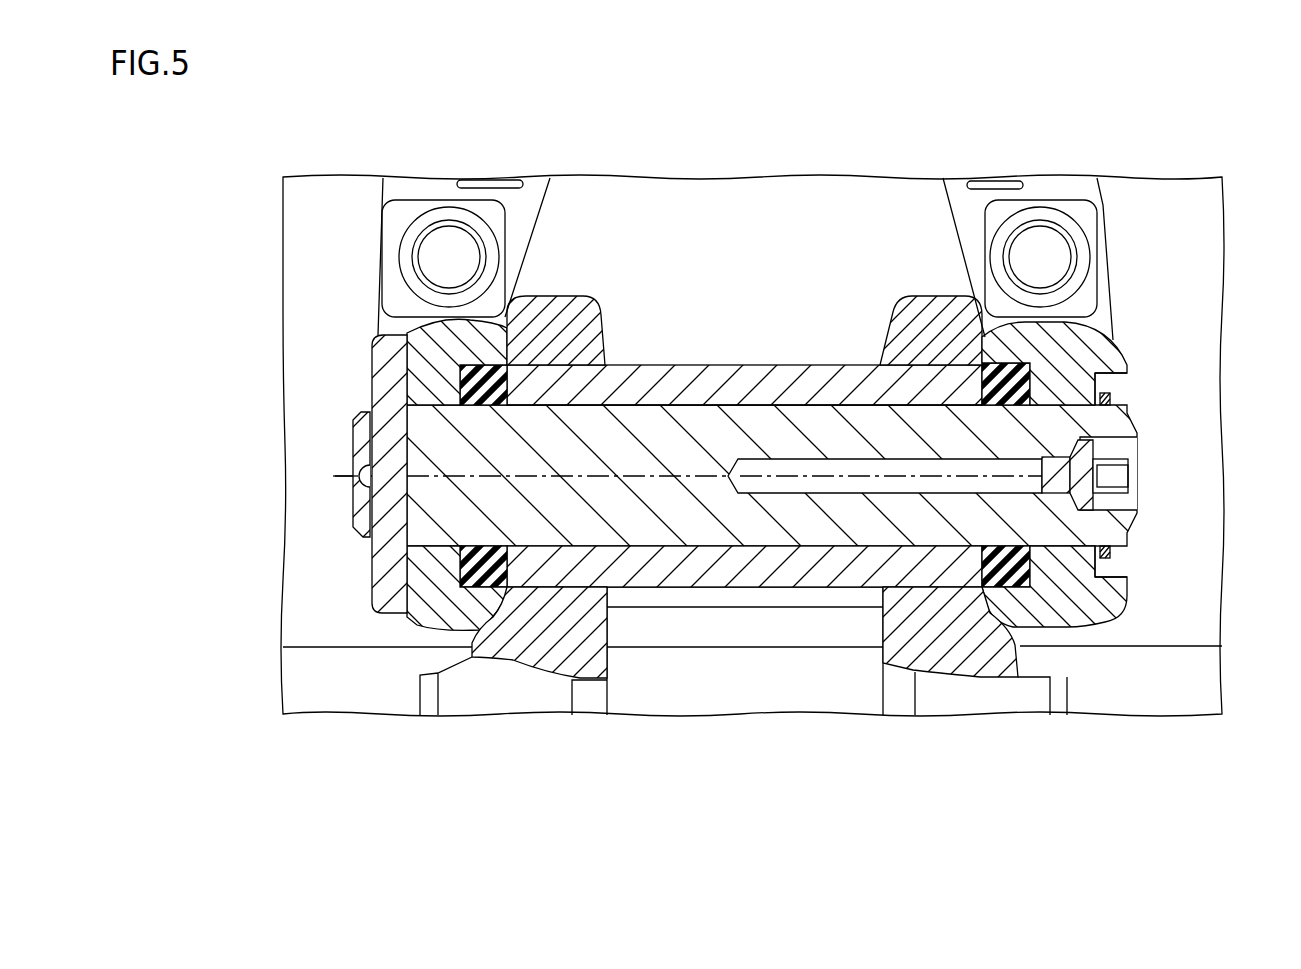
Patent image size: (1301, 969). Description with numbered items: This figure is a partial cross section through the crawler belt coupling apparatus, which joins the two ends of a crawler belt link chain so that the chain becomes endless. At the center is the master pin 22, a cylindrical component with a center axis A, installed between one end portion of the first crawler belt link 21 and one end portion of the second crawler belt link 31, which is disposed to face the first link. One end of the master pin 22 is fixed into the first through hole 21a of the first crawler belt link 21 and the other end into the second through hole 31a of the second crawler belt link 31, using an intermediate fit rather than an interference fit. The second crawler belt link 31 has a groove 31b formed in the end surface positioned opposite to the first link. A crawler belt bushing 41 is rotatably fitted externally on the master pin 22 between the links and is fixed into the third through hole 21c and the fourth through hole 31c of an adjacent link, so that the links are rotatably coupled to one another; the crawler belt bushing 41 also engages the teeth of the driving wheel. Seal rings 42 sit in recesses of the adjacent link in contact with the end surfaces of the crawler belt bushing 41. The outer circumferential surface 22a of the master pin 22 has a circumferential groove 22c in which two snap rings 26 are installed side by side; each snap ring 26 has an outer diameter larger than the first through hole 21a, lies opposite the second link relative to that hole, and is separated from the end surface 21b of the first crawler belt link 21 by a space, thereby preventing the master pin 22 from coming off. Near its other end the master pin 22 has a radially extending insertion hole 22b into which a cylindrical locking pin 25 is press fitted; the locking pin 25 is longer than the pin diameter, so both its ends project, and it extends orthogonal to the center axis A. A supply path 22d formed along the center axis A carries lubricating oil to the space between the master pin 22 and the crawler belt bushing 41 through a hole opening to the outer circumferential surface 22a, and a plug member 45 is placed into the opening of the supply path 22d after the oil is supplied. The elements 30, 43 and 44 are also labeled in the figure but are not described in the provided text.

The housing 30 is at (1197, 324).
The second crawler belt link 31 is at (557, 360).
The second through hole 31a is at (360, 413).
The groove 31b is at (470, 622).
The fourth through hole 31c is at (578, 327).
The first crawler belt link 21 is at (912, 327).
The first through hole 21a is at (1082, 437).
The end surface 21b is at (1100, 563).
The third through hole 21c is at (930, 347).
The master pin 22 is at (653, 437).
The outer circumferential surface 22a is at (700, 405).
The insertion hole 22b is at (360, 517).
The circumferential groove 22c is at (1112, 526).
The supply path 22d is at (830, 443).
The locking pin 25 is at (357, 445).
The snap ring 26 is at (1117, 400).
The crawler belt bushing 41 is at (770, 387).
The seal ring 42 is at (478, 388).
The bolt 43 is at (452, 253).
The bolt hole 44 is at (403, 223).
The plug member 45 is at (1140, 480).
The center axis A is at (1177, 474).